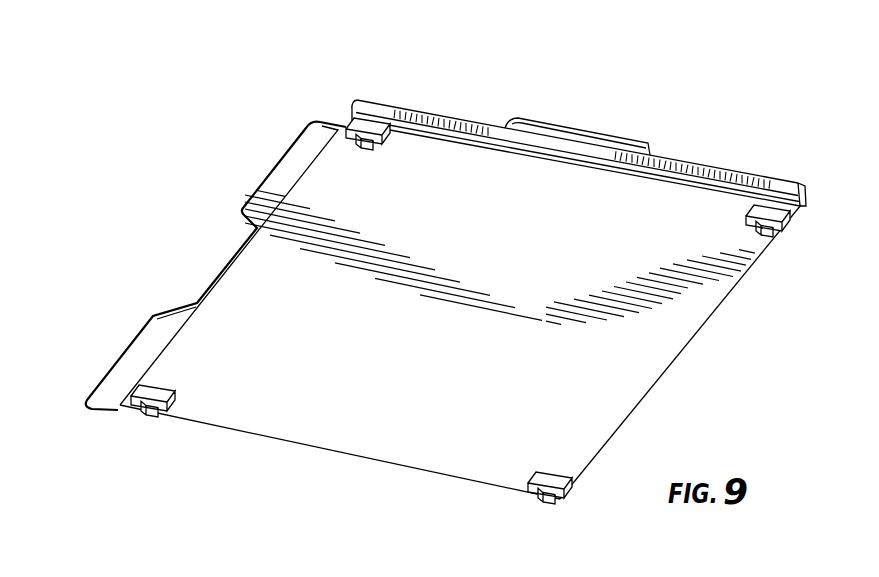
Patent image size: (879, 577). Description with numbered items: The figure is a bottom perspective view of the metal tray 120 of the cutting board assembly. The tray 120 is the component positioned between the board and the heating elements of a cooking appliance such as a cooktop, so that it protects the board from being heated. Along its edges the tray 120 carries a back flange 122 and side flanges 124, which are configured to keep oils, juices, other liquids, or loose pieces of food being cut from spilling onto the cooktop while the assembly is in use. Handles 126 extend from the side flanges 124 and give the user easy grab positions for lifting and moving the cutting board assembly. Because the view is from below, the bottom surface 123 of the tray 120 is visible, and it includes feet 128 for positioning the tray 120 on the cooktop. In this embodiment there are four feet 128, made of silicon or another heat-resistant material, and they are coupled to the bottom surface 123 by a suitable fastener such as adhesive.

The tray 120 is at (437, 293).
The back flange 122 is at (801, 185).
The bottom surface 123 is at (270, 298).
The side flanges 124 is at (447, 112).
The handles 126 is at (588, 135).
The feet 128 is at (373, 128).